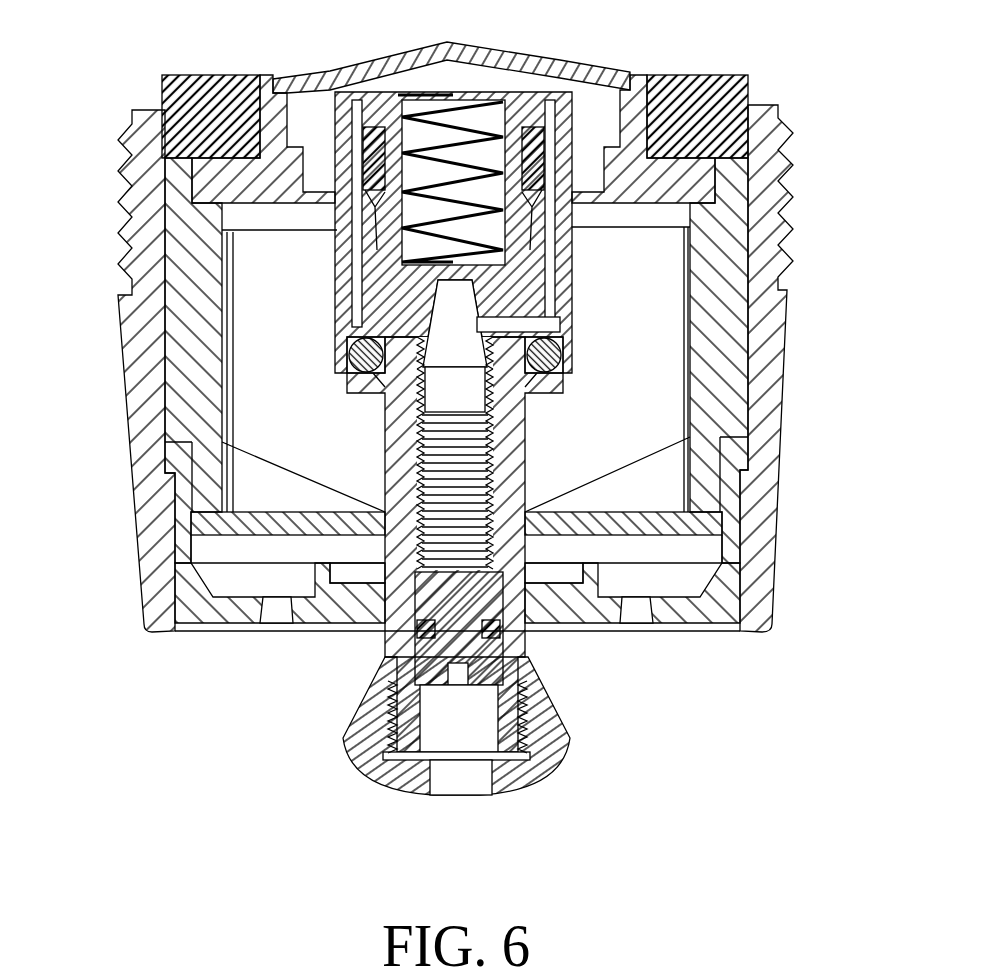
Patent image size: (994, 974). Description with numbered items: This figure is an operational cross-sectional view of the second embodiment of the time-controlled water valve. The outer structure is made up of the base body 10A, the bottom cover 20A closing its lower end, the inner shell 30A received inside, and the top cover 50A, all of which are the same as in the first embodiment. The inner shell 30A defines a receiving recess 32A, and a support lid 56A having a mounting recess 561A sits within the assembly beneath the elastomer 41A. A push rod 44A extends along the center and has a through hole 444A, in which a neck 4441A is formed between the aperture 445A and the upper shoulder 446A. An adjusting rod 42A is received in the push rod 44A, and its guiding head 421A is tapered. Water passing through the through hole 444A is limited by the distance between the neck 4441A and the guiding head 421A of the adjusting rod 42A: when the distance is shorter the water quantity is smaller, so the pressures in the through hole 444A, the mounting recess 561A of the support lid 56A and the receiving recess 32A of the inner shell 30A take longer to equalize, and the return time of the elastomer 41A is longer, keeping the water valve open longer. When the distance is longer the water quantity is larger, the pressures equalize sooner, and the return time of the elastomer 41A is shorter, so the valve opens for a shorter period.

The base body 10A is at (780, 440).
The bottom cover 20A is at (190, 608).
The inner shell 30A is at (187, 393).
The receiving recess 32A is at (232, 272).
The elastomer 41A is at (478, 97).
The adjusting rod 42A is at (460, 397).
The push rod 44A is at (512, 500).
The top cover 50A is at (690, 177).
The support lid 56A is at (345, 273).
The guiding head 421A is at (477, 322).
The through hole 444A is at (400, 220).
The aperture 445A is at (563, 337).
The upper shoulder 446A is at (363, 267).
The mounting recess 561A is at (347, 315).
The neck 4441A is at (480, 283).